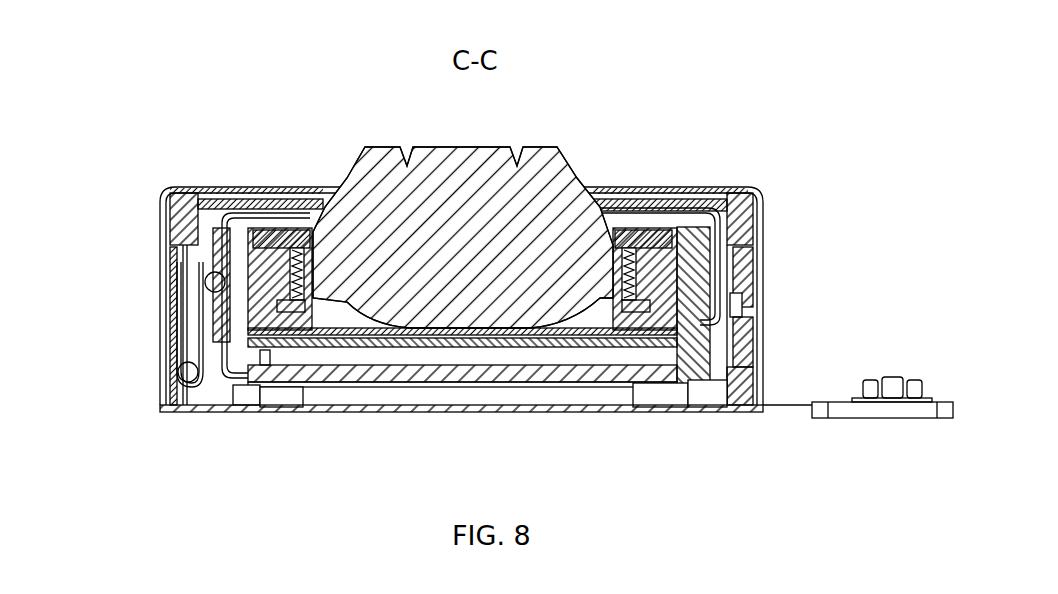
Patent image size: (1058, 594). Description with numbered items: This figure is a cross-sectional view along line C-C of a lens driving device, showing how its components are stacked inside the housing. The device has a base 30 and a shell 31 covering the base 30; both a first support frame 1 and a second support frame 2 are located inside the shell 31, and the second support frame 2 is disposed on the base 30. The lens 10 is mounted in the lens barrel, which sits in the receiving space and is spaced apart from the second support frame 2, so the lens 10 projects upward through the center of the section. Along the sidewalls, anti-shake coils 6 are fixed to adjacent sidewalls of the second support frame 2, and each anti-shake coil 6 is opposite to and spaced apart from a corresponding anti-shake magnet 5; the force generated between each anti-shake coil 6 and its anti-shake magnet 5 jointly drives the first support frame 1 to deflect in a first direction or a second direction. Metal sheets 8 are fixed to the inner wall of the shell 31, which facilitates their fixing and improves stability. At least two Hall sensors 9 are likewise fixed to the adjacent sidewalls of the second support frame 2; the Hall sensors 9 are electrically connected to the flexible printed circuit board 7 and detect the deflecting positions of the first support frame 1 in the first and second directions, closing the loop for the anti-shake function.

The first support frame 1 is at (516, 288).
The second support frame 2 is at (847, 415).
The anti-shake magnet 5 is at (547, 290).
The anti-shake coil 6 is at (802, 274).
The flexible printed circuit board 7 is at (802, 334).
The metal sheet 8 is at (799, 369).
The Hall sensor 9 is at (801, 295).
The lens 10 is at (510, 214).
The base 30 is at (439, 434).
The shell 31 is at (137, 312).